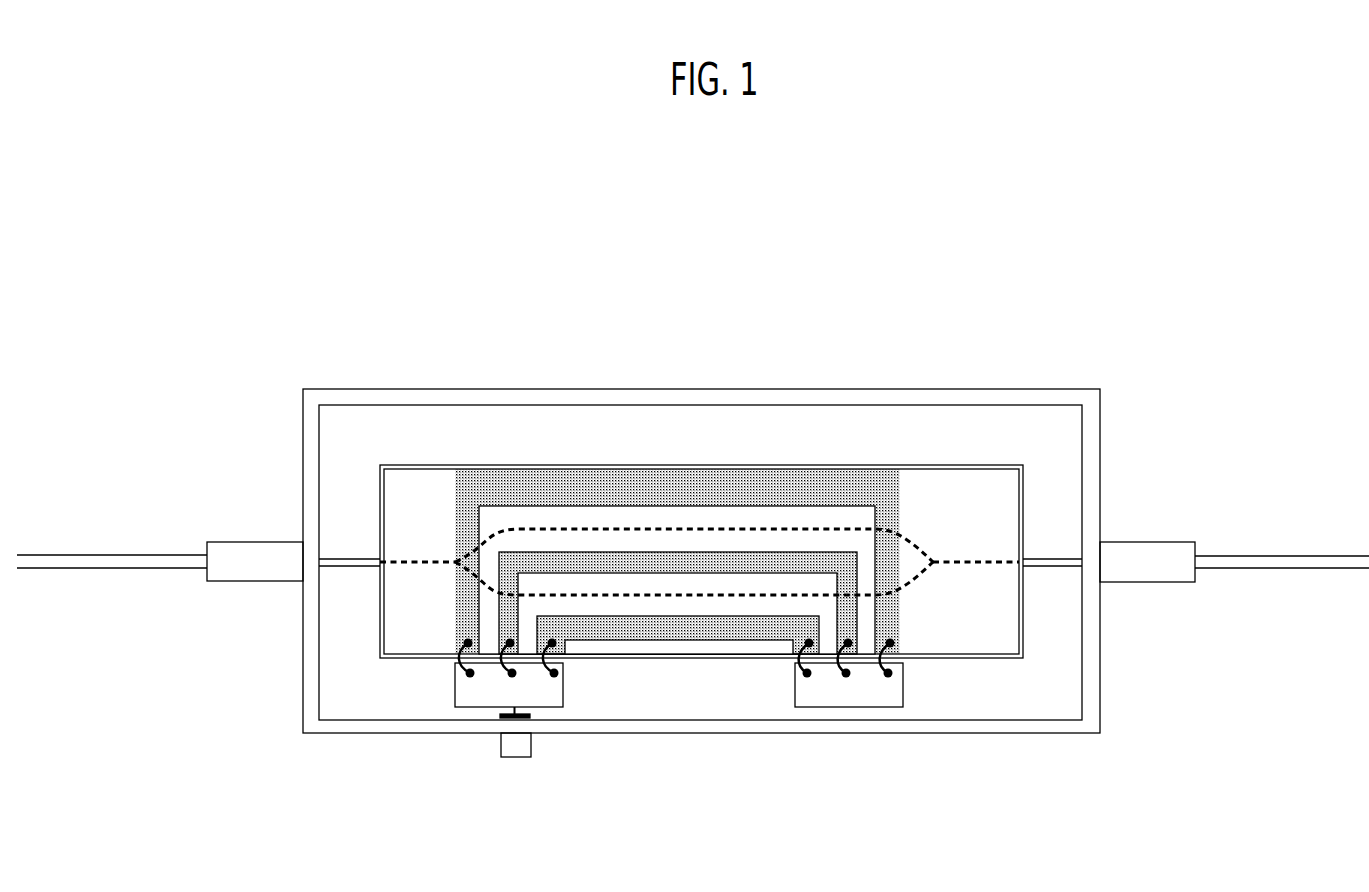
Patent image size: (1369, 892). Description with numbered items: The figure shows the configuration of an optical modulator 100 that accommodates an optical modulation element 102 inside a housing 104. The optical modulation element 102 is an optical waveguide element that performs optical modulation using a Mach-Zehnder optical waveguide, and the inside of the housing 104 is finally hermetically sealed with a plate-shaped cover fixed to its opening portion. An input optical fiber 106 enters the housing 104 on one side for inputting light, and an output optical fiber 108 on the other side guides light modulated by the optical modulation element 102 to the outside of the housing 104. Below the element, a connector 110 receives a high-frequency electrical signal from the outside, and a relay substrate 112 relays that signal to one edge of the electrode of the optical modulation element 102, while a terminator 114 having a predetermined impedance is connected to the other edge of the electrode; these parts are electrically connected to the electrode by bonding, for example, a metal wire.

The optical modulator 100 is at (282, 309).
The optical modulation element 102 is at (448, 455).
The housing 104 is at (455, 389).
The input optical fiber 106 is at (50, 562).
The output optical fiber 108 is at (1262, 553).
The connector 110 is at (517, 748).
The relay substrate 112 is at (463, 687).
The terminator 114 is at (802, 687).